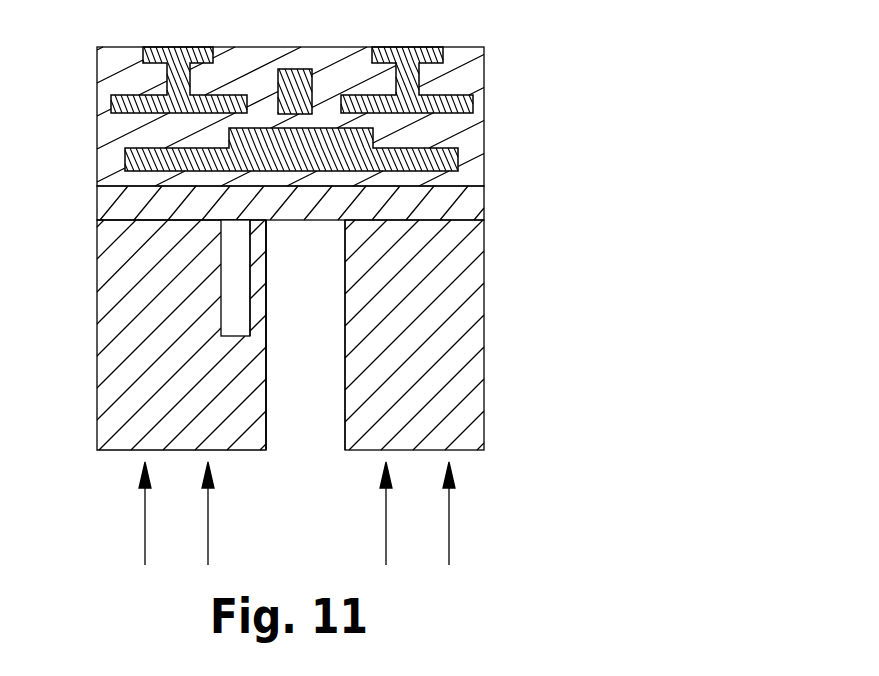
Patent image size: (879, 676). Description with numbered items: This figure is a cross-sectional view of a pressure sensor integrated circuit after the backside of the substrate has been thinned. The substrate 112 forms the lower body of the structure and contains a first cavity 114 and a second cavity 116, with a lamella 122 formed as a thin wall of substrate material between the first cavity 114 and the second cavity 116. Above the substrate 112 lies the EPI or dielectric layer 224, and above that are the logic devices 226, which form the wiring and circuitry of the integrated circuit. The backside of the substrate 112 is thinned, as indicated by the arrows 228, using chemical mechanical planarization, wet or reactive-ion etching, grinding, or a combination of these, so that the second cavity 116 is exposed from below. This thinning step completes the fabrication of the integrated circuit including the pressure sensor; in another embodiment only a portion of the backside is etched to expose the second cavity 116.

The substrate 112 is at (463, 403).
The first cavity 114 is at (243, 288).
The second cavity 116 is at (294, 428).
The lamella 122 is at (262, 315).
The EPI or dielectric layer 224 is at (465, 206).
The logic devices 226 is at (465, 118).
The backside thinning 228 is at (449, 521).